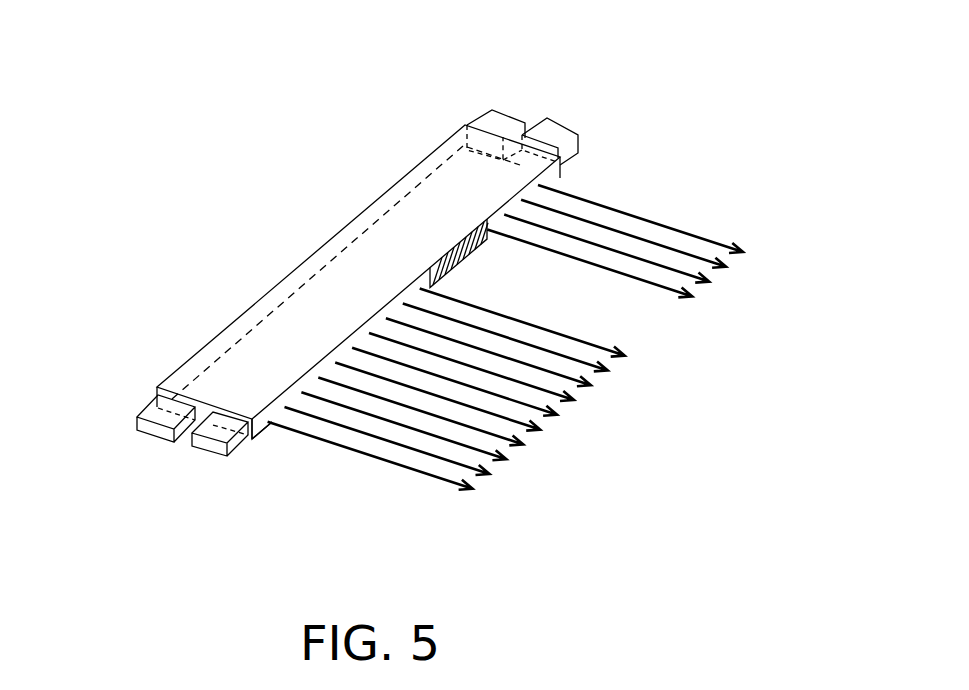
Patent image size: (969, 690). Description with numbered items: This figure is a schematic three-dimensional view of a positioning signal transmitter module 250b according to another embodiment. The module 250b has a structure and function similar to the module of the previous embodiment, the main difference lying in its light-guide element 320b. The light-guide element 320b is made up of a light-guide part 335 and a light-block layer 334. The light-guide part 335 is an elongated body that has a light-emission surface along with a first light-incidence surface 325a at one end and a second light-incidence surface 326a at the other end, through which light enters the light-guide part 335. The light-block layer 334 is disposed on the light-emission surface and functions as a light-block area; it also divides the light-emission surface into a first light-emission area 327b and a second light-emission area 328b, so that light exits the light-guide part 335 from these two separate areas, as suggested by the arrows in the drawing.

The positioning signal transmitter module 250b is at (138, 262).
The light-guide element 320b is at (420, 82).
The light-guide part 335 is at (305, 297).
The light-block layer 334 is at (455, 243).
The second light-incidence surface 326a is at (466, 125).
The second light-emission area 328b is at (562, 183).
The first light-incidence surface 325a is at (205, 407).
The first light-emission area 327b is at (261, 430).